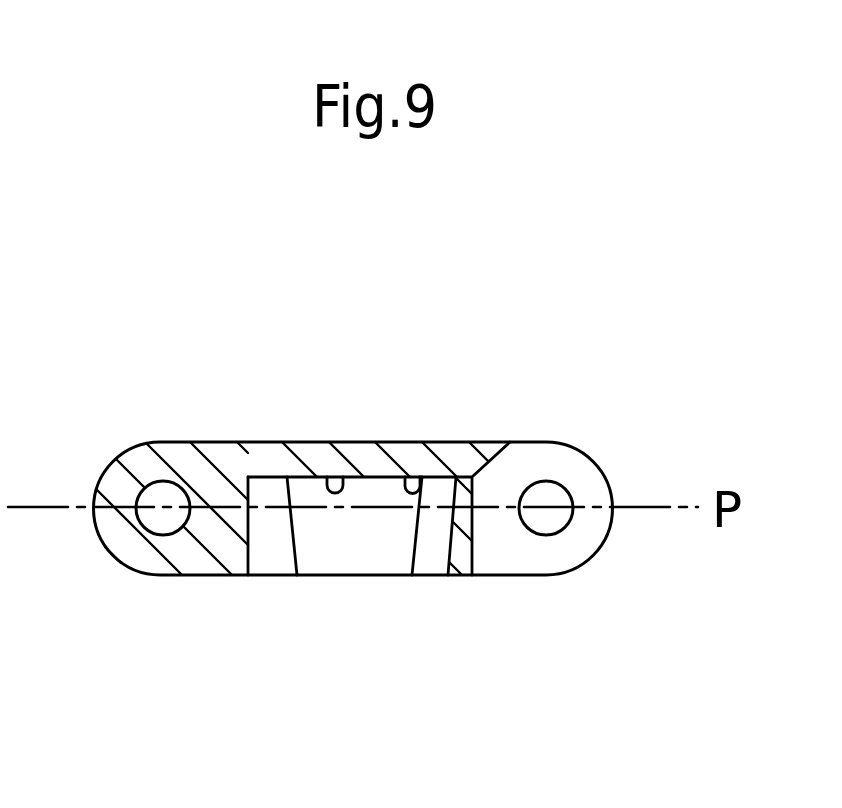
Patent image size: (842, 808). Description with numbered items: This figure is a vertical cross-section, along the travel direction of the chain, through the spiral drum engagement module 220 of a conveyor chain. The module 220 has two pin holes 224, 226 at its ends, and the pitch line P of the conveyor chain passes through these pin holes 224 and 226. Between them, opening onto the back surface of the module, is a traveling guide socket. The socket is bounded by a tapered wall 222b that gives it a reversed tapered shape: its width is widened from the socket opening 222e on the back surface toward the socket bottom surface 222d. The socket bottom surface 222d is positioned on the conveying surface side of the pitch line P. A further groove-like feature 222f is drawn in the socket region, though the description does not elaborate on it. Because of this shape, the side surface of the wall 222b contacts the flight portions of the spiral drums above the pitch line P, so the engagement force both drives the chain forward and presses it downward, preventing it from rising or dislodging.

The spiral drum engagement module 220 is at (302, 655).
The tapered wall 222b is at (274, 499).
The socket bottom surface 222d is at (328, 477).
The socket opening 222e is at (365, 573).
The groove 222f is at (405, 478).
The pin hole 224 is at (534, 493).
The pin hole 226 is at (146, 496).